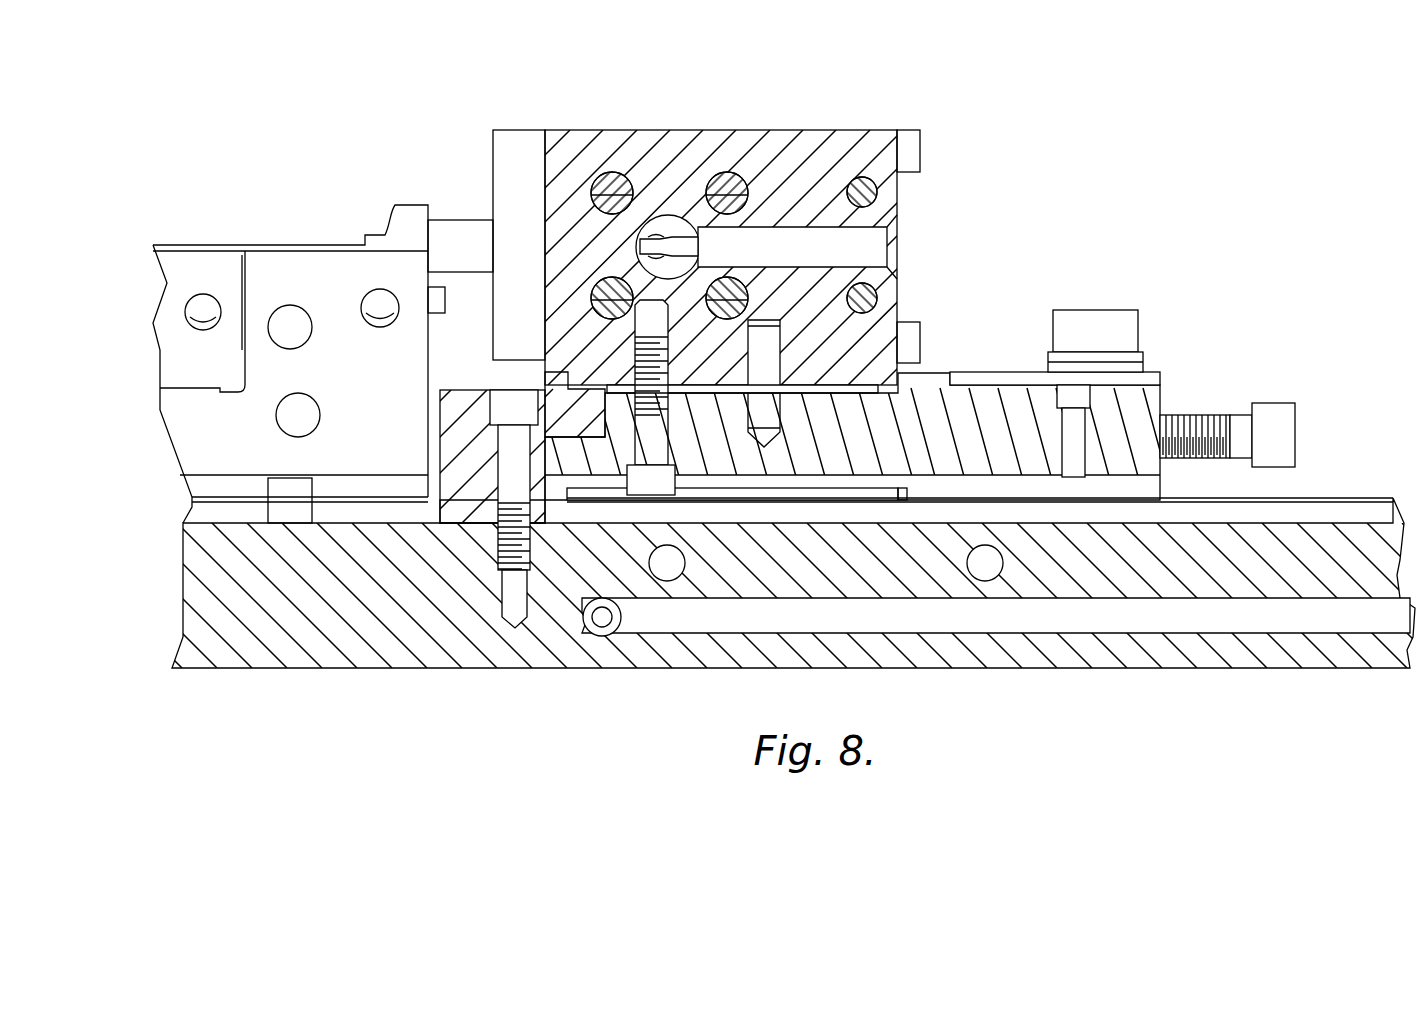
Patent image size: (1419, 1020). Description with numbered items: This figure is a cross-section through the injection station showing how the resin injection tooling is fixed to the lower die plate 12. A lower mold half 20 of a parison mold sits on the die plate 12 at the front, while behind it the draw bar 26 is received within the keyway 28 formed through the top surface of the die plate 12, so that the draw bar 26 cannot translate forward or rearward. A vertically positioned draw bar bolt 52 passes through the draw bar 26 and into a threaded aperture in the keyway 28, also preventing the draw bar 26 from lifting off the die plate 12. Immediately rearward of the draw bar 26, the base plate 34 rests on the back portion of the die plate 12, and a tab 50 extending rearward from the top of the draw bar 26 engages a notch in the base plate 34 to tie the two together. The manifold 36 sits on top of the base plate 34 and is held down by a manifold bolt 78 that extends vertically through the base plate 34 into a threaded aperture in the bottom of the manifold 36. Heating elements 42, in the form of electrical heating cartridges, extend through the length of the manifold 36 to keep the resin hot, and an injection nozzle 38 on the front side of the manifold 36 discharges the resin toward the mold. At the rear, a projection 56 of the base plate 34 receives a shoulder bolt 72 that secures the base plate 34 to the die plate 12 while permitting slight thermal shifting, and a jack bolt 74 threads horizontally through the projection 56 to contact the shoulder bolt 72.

The lower die plate 12 is at (432, 660).
The lower mold half 20 is at (207, 432).
The draw bar 26 is at (455, 392).
The keyway 28 is at (468, 518).
The base plate 34 is at (945, 373).
The manifold 36 is at (858, 137).
The injection nozzle 38 is at (458, 225).
The heating elements 42 is at (730, 185).
The tabs 50 is at (575, 400).
The draw bar bolts 52 is at (512, 405).
The projections 56 is at (1150, 385).
The shoulder bolt 72 is at (1125, 312).
The jack bolt 74 is at (1272, 415).
The manifold bolts 78 is at (660, 492).